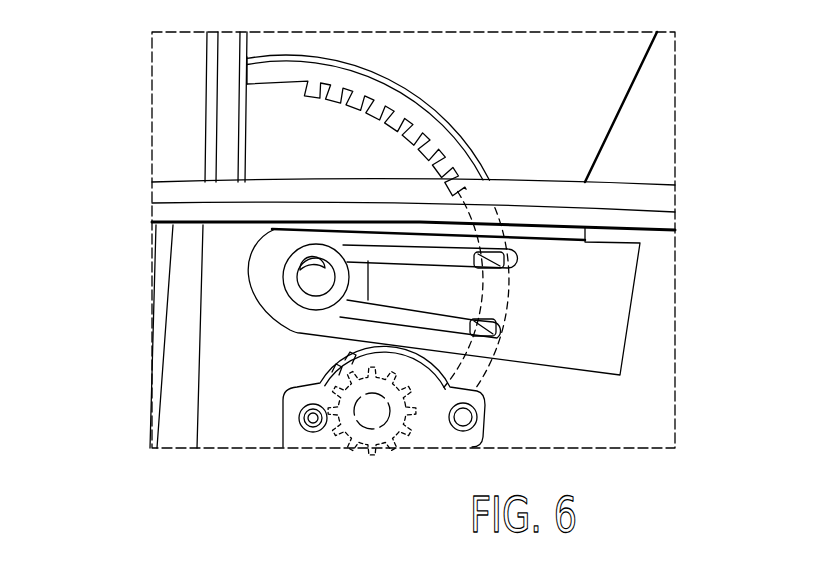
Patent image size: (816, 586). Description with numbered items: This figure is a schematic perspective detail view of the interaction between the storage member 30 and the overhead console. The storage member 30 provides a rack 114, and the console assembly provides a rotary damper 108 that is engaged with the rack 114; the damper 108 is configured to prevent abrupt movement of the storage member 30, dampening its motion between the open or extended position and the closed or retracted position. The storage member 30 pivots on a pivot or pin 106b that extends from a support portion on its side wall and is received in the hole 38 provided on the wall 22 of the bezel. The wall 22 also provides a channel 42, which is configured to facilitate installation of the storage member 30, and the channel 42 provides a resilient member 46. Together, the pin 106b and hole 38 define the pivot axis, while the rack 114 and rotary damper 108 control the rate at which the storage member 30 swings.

The storage member 30 is at (498, 108).
The rack 114 is at (395, 112).
The hole 38 is at (338, 306).
The pivot or pin 106b is at (298, 284).
The channel 42 is at (420, 318).
The resilient member 46 is at (413, 285).
The wall 22 is at (501, 370).
The rotary damper 108 is at (367, 440).